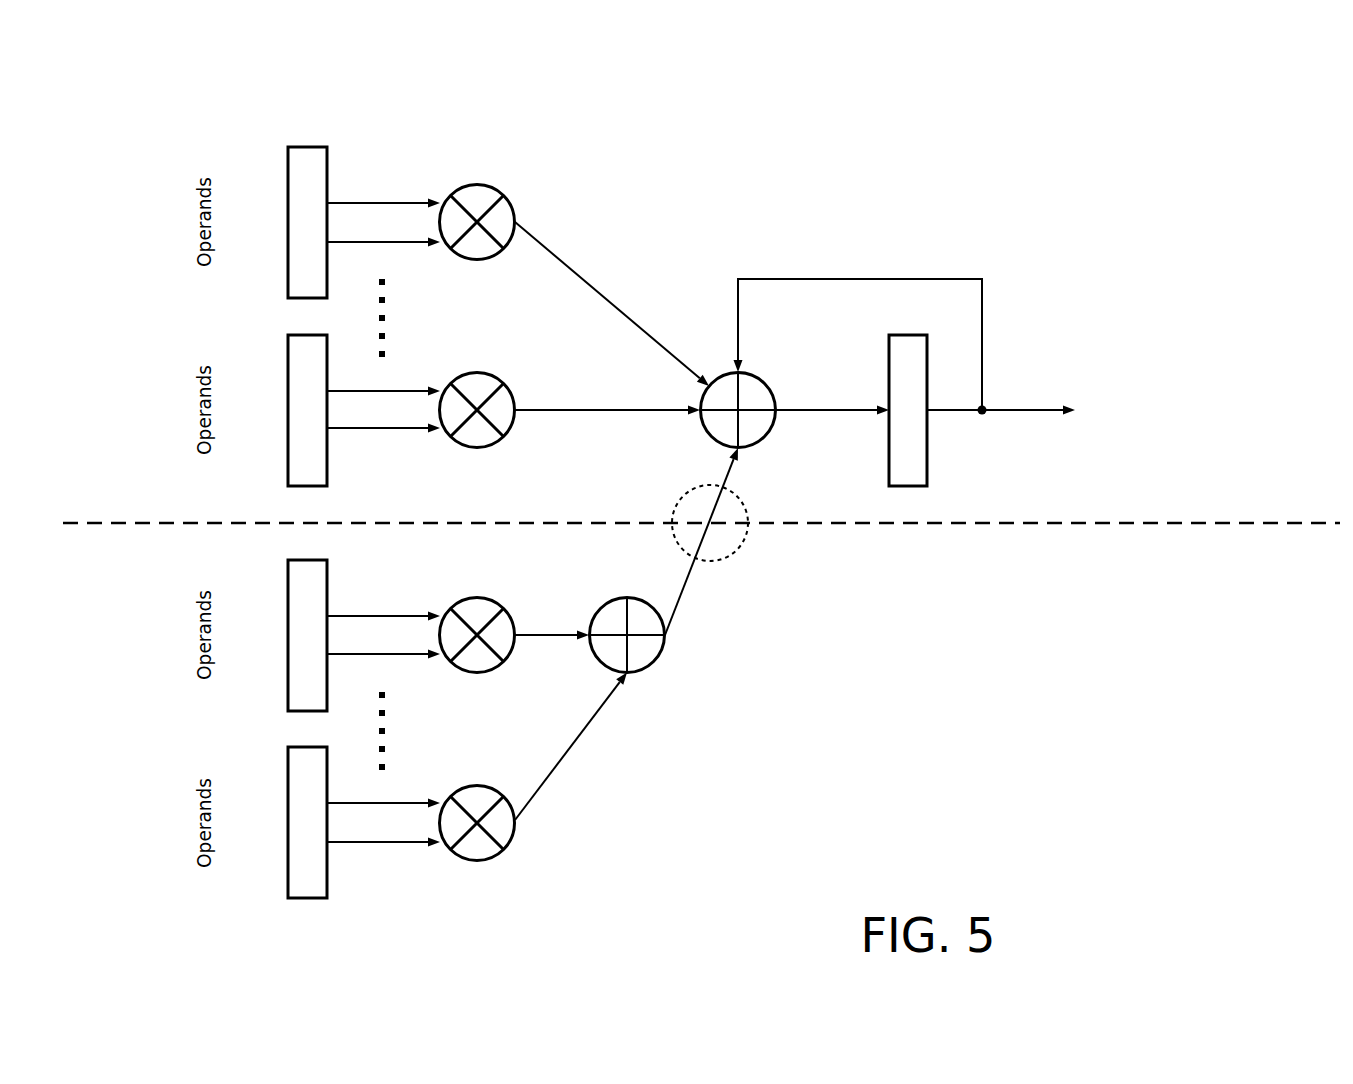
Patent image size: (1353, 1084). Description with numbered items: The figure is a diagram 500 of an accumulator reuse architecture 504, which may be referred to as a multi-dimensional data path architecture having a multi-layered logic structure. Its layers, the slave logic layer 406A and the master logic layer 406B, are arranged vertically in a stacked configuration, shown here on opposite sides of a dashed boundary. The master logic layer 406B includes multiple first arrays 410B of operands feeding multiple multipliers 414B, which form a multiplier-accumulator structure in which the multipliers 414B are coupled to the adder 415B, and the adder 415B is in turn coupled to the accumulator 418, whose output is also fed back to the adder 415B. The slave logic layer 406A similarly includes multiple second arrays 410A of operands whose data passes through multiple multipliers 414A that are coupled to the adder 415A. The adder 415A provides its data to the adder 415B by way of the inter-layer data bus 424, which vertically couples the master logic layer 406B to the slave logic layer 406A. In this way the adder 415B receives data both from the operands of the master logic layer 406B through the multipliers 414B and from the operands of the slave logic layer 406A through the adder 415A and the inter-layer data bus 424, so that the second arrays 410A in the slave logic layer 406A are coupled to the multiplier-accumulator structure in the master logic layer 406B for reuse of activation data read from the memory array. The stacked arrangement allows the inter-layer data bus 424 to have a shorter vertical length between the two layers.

The diagram 500 is at (177, 54).
The accumulator reuse architecture 504 is at (701, 63).
The first arrays of operands 410B is at (307, 316).
The second arrays of operands 410A is at (307, 729).
The multipliers 414B is at (477, 286).
The multipliers 414A is at (477, 700).
The adder 415B is at (762, 394).
The adder 415A is at (654, 652).
The accumulator 418 is at (908, 410).
The inter-layer data bus 424 is at (760, 541).
The master logic layer 406B is at (701, 503).
The slave logic layer 406A is at (1171, 552).